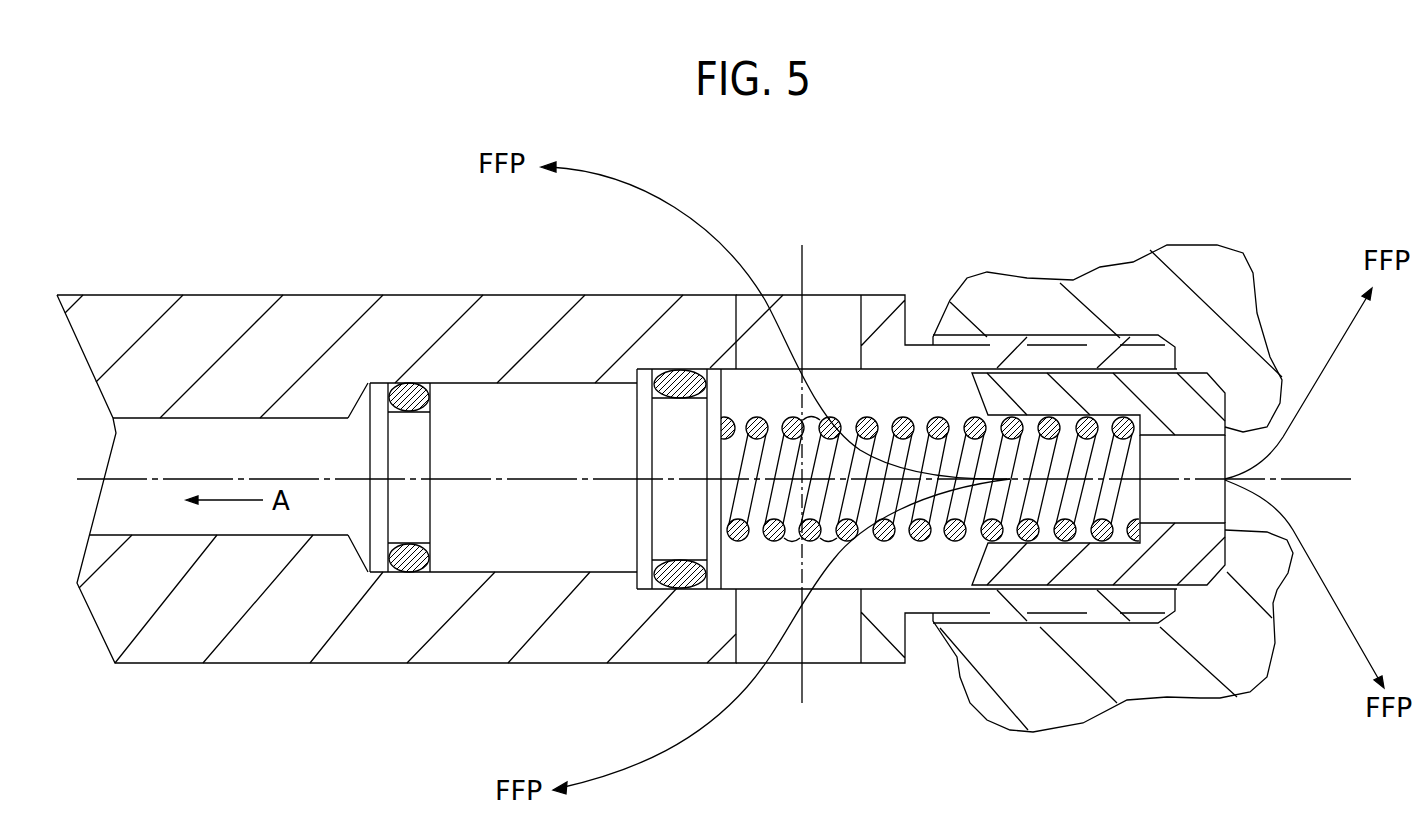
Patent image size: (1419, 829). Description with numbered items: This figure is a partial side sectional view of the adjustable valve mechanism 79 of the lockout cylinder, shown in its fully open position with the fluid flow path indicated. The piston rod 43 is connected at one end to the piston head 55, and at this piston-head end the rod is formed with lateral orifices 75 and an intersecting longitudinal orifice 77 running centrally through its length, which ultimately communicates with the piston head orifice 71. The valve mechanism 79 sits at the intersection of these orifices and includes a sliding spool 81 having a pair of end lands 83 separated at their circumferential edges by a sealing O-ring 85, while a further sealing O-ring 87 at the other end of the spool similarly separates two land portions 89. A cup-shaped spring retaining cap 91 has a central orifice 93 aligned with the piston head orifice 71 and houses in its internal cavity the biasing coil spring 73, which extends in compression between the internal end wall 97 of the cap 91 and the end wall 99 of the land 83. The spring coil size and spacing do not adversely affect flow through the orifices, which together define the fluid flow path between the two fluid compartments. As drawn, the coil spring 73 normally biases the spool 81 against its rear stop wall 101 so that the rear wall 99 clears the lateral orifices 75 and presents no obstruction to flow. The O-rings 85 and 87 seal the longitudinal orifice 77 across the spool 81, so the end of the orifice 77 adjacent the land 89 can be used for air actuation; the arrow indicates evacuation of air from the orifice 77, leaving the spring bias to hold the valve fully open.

The piston rod 43 is at (222, 320).
The longitudinal orifice 77 is at (250, 474).
The rear stop wall 101 is at (369, 382).
The spool 81 is at (530, 519).
The land portions 89 is at (436, 448).
The sealing O-ring 87 is at (426, 392).
The end lands 83 is at (713, 472).
The sealing O-ring 85 is at (653, 386).
The end wall 99 is at (715, 407).
The lateral orifice 75 is at (826, 313).
The biasing coil spring 73 is at (912, 440).
The internal end wall 97 is at (1140, 422).
The spring retaining cap 91 is at (1210, 557).
The central orifice 93 is at (1193, 467).
The piston head 55 is at (1130, 272).
The adjustable valve mechanism 79 is at (935, 258).
The piston head orifice 71 is at (1262, 443).